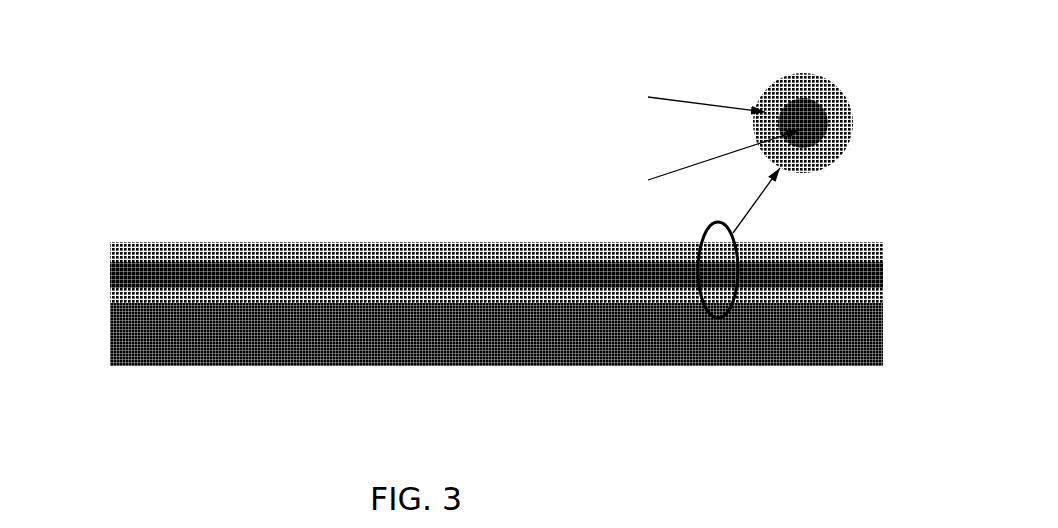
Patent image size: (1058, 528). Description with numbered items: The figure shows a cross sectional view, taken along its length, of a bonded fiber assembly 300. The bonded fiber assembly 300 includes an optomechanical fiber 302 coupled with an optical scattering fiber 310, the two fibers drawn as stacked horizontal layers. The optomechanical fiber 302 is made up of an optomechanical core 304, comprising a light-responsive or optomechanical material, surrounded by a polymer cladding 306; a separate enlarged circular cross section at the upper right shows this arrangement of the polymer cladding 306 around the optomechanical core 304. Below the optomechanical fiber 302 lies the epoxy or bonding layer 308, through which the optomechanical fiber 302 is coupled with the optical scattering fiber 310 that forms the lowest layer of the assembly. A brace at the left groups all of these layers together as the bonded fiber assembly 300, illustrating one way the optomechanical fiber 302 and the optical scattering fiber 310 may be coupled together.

The bonded fiber assembly 300 is at (445, 304).
The optomechanical fiber 302 is at (855, 78).
The optomechanical core 304 is at (390, 278).
The polymer cladding 306 is at (415, 258).
The epoxy/bonding layer 308 is at (222, 317).
The optical scattering fiber 310 is at (295, 350).